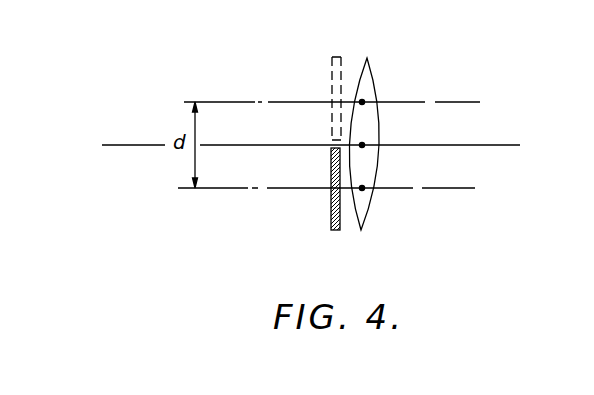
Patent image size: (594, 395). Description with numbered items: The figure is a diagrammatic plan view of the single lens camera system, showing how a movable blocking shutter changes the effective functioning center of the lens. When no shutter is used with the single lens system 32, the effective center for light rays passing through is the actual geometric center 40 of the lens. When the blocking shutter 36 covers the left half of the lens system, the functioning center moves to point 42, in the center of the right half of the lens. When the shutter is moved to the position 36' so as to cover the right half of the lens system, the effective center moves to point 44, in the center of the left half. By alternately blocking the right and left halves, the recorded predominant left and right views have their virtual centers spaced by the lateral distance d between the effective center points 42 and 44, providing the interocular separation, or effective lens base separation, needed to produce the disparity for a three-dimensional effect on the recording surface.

The single lens system 32 is at (370, 79).
The blocking shutter 36 is at (298, 189).
The blocking shutter in shifted position 36' is at (299, 88).
The geometric center of the lens 40 is at (364, 144).
The effective center point of right half 42 is at (364, 101).
The effective center point of left half 44 is at (364, 187).